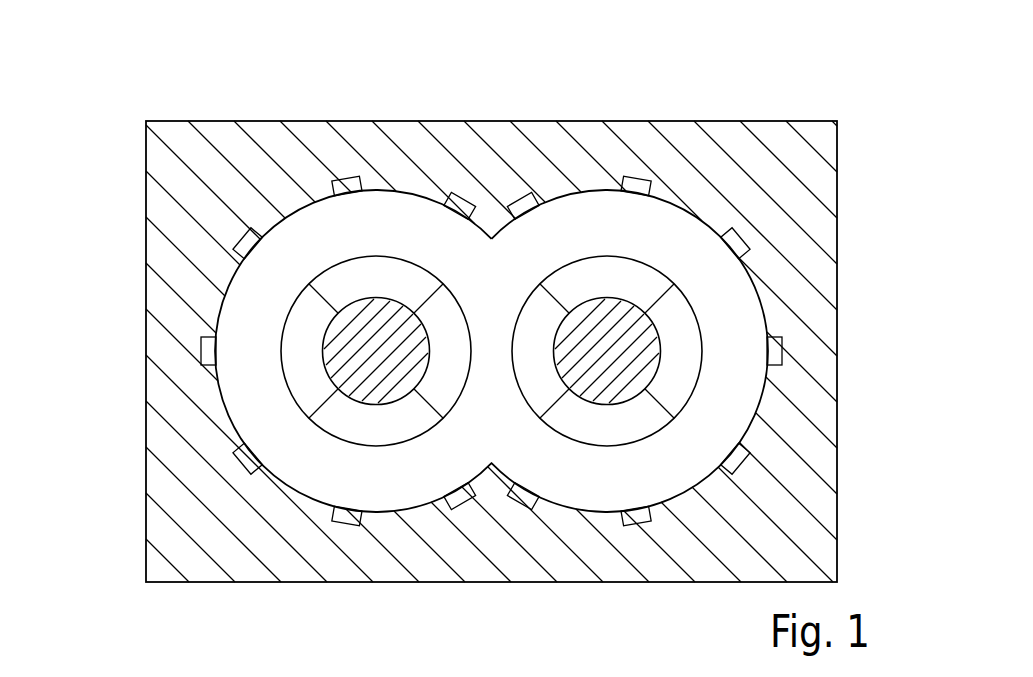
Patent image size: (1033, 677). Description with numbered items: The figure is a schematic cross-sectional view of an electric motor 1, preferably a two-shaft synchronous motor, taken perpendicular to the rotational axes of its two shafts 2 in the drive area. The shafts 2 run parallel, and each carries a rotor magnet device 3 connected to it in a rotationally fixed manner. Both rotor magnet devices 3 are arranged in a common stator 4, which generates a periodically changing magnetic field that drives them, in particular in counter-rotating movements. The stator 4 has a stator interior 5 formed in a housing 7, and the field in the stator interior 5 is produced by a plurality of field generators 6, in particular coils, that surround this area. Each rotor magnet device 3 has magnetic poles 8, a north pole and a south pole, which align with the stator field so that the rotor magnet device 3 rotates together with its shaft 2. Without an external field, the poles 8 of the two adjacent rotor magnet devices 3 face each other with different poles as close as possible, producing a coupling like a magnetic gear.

The electric motor 1 is at (831, 58).
The shaft 2 is at (345, 333).
The rotor magnet device 3 is at (272, 420).
The stator 4 is at (788, 285).
The stator interior 5 is at (680, 237).
The field generator 6 is at (345, 187).
The housing 7 is at (698, 147).
The magnetic pole 8 is at (310, 390).